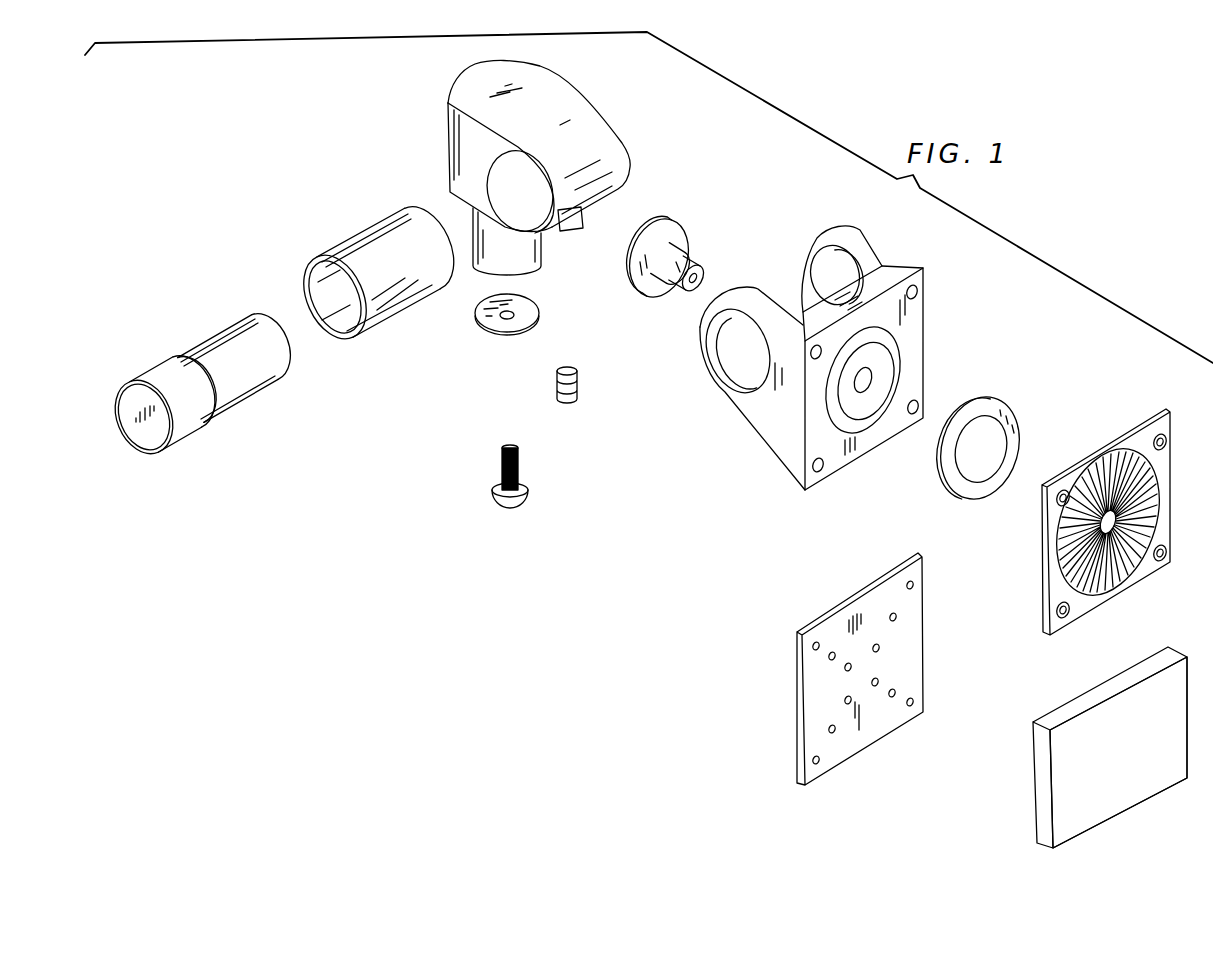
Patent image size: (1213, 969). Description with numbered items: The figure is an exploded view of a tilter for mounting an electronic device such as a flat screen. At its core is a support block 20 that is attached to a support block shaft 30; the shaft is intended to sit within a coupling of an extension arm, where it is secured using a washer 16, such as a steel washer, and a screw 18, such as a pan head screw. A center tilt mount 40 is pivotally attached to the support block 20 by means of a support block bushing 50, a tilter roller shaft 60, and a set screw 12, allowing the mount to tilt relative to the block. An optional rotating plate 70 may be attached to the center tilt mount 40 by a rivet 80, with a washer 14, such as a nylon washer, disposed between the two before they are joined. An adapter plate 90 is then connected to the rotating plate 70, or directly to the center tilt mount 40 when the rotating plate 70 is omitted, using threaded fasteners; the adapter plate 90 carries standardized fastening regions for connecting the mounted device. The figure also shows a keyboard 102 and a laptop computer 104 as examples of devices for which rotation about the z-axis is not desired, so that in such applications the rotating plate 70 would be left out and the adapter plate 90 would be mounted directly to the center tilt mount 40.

The set screw 12 is at (577, 388).
The washer 14 is at (1008, 397).
The washer 16 is at (502, 335).
The screw 18 is at (502, 468).
The support block 20 is at (563, 72).
The support block shaft 30 is at (533, 268).
The center tilt mount 40 is at (868, 237).
The support block bushing 50 is at (355, 236).
The tilter roller shaft 60 is at (212, 338).
The rotating plate 70 is at (1115, 437).
The rivet 80 is at (648, 222).
The adapter plate 90 is at (848, 598).
The keyboard 102 is at (1043, 768).
The laptop computer 104 is at (1043, 768).